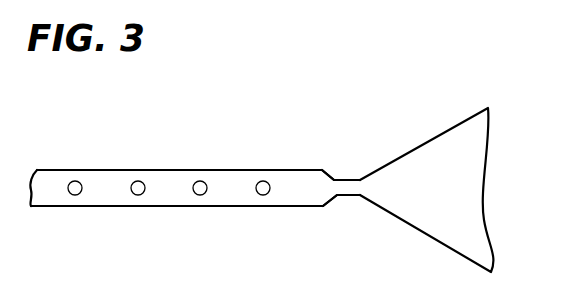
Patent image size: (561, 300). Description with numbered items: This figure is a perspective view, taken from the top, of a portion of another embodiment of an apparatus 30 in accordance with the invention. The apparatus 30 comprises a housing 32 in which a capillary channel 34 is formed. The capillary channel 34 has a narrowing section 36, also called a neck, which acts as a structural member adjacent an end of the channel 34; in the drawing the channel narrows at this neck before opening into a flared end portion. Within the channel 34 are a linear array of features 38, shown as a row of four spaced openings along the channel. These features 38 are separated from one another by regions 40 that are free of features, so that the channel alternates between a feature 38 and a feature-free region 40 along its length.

The apparatus 30 is at (298, 133).
The housing 32 is at (188, 170).
The capillary channel 34 is at (307, 197).
The narrowing section 36 is at (348, 187).
The features 38 is at (263, 195).
The regions free of features 40 is at (167, 187).